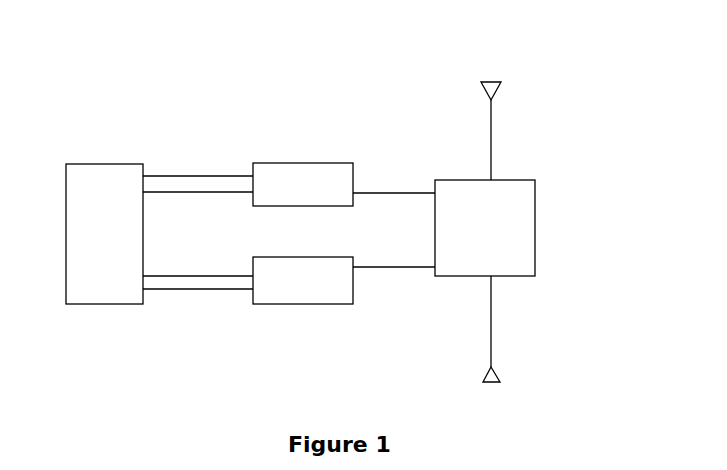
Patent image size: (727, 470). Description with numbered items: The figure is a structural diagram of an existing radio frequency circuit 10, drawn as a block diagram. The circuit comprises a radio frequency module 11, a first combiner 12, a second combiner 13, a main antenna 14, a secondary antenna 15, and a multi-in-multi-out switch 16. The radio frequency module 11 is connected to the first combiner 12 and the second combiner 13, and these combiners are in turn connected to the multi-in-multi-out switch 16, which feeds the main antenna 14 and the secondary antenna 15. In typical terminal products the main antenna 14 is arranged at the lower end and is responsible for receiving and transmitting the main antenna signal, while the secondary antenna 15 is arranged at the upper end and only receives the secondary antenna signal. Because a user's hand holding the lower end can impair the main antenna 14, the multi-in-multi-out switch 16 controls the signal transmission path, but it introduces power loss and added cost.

The existing radio frequency circuit 10 is at (87, 25).
The radio frequency module 11 is at (107, 163).
The first combiner 12 is at (337, 163).
The second combiner 13 is at (340, 304).
The main antenna 14 is at (498, 82).
The secondary antenna 15 is at (499, 382).
The multi-in-multi-out switch 16 is at (535, 233).